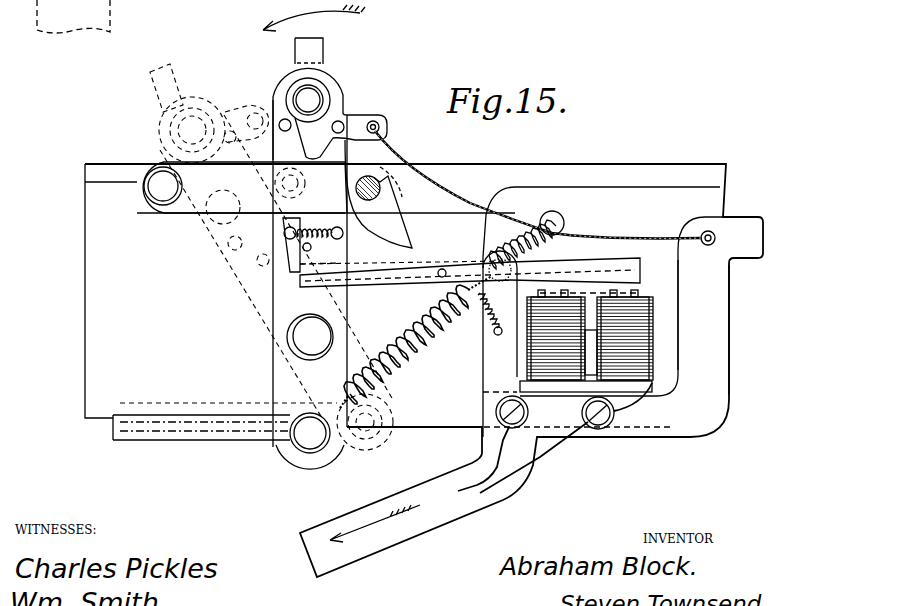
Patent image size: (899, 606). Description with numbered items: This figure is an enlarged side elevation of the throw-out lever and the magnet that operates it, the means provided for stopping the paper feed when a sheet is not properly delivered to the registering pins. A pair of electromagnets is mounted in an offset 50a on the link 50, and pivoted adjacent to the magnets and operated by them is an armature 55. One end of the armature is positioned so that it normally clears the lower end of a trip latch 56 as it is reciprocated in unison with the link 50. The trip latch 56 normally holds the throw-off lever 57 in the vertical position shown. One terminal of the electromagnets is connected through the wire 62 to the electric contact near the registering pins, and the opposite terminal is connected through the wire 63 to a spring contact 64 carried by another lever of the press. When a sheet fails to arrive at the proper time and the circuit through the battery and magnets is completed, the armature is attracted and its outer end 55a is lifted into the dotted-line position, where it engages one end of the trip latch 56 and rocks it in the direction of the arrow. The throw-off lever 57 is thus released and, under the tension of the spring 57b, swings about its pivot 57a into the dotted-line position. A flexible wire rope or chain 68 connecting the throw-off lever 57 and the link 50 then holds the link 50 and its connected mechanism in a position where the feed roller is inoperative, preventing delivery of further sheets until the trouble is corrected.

The link 50 is at (424, 370).
The offset 50a is at (703, 327).
The armature 55 is at (470, 265).
The outer end of armature 55a is at (337, 263).
The trip latch 56 is at (290, 258).
The throw-off lever 57 is at (265, 253).
The pivot 57a is at (305, 331).
The spring 57b is at (430, 340).
The wire 62 is at (475, 451).
The wire 63 is at (565, 440).
The spring contact 64 is at (586, 341).
The wire rope or chain 68 is at (485, 193).